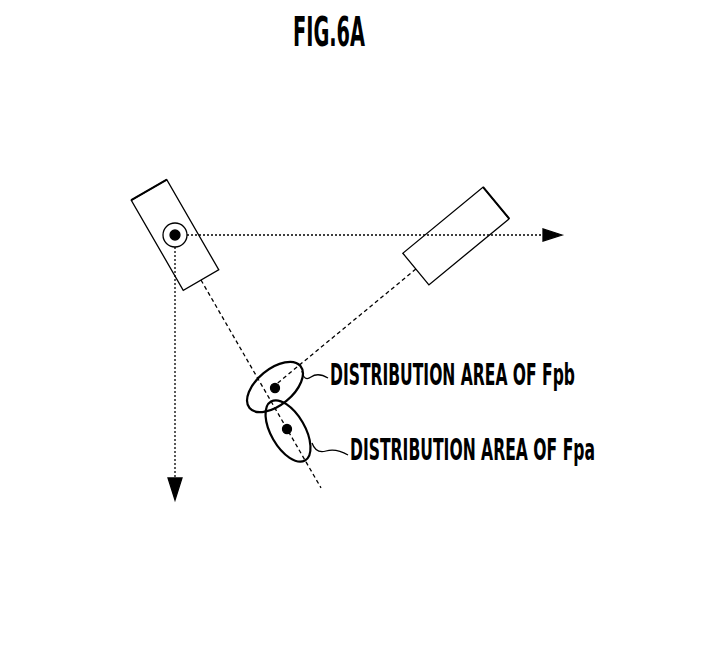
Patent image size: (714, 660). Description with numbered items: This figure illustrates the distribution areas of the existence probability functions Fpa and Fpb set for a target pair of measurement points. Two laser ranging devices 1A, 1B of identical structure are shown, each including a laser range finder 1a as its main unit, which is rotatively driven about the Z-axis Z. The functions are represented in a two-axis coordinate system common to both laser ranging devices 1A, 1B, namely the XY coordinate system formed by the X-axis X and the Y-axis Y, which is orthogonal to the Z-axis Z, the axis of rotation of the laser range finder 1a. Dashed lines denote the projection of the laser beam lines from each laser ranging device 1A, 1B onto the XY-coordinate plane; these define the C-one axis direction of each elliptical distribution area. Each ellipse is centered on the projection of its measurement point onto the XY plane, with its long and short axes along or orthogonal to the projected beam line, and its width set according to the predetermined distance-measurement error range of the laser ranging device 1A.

The laser ranging device 1A is at (124, 182).
The laser ranging device 1B is at (432, 197).
The laser range finder 1a is at (152, 182).
The X-axis X is at (165, 373).
The Y-axis Y is at (377, 220).
The Z-axis Z is at (178, 223).